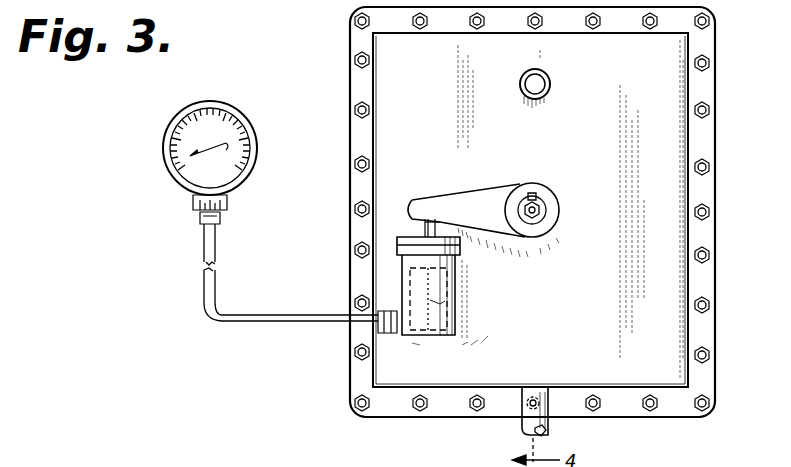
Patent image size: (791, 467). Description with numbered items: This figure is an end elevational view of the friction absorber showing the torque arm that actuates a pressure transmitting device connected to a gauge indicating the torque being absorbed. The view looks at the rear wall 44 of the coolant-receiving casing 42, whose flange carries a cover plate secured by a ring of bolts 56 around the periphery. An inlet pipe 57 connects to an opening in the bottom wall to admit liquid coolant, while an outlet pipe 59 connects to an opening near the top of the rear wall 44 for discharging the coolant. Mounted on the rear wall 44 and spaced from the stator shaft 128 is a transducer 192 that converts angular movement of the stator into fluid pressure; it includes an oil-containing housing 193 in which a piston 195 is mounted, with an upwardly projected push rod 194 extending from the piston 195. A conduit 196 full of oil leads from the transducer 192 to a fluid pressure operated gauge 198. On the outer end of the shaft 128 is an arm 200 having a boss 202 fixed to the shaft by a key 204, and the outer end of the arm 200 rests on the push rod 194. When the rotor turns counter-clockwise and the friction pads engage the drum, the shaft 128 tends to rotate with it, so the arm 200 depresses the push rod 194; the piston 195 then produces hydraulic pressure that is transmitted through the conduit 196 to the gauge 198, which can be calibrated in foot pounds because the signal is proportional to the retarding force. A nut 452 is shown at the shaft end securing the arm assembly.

The coolant-receiving casing 42 is at (533, 233).
The rear wall 44 is at (538, 141).
The bolts 56 is at (648, 0).
The inlet pipe 57 is at (522, 428).
The outlet pipe 59 is at (548, 91).
The cylindrical shaft portion 128 is at (546, 205).
The transducer 192 is at (410, 340).
The housing 193 is at (461, 291).
The push rod 194 is at (442, 222).
The piston 195 is at (462, 302).
The conduit 196 is at (216, 255).
The fluid pressure operated gauge 198 is at (208, 101).
The arm 200 is at (488, 188).
The boss 202 is at (530, 217).
The key 204 is at (533, 192).
The nut 452 is at (538, 215).